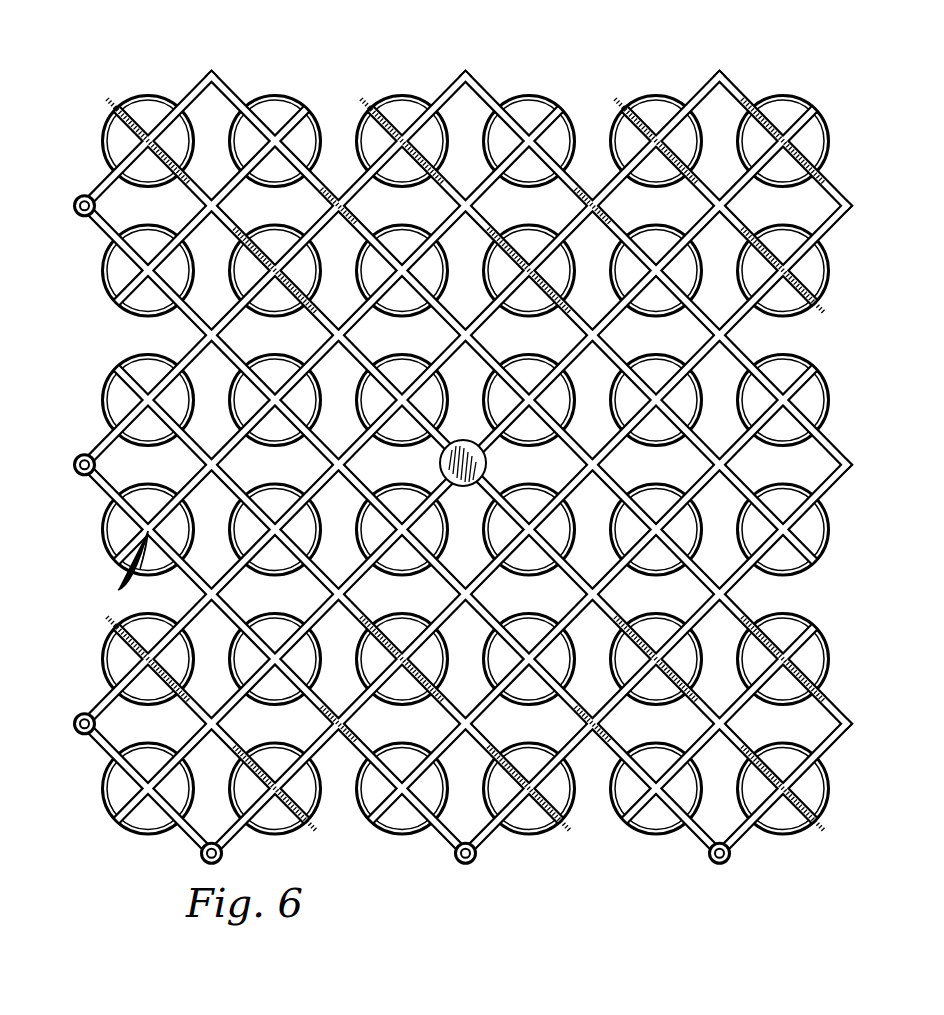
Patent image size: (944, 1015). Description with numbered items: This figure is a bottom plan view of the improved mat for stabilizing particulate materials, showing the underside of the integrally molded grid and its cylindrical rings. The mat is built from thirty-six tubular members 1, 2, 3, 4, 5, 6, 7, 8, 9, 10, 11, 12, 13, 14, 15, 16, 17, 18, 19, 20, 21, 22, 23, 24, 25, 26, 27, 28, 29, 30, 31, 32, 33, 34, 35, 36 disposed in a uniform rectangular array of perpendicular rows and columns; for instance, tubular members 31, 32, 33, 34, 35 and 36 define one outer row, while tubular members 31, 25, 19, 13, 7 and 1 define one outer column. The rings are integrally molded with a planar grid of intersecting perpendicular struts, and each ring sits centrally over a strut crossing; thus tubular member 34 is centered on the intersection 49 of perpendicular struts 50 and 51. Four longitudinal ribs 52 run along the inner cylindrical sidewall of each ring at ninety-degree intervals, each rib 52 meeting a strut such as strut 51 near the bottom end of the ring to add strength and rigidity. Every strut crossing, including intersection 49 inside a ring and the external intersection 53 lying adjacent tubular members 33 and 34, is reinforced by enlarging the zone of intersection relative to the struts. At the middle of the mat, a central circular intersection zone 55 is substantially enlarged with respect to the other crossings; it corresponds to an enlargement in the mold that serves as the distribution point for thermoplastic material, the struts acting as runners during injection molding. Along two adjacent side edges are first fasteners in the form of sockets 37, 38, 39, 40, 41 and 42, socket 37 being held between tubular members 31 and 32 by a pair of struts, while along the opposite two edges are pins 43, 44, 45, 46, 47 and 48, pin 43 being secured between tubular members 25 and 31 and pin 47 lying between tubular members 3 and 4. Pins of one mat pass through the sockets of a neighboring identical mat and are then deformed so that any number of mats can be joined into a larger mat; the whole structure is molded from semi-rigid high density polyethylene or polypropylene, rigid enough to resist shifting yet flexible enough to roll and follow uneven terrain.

The tubular member 1 is at (783, 120).
The tubular member 2 is at (783, 264).
The tubular member 3 is at (783, 394).
The tubular member 4 is at (783, 523).
The tubular member 5 is at (783, 653).
The tubular member 6 is at (783, 782).
The tubular member 7 is at (656, 120).
The tubular member 8 is at (656, 264).
The tubular member 9 is at (656, 394).
The tubular member 10 is at (656, 523).
The tubular member 11 is at (656, 653).
The tubular member 12 is at (656, 782).
The tubular member 13 is at (529, 120).
The tubular member 14 is at (529, 264).
The tubular member 15 is at (529, 394).
The tubular member 16 is at (529, 523).
The tubular member 17 is at (529, 653).
The tubular member 18 is at (529, 782).
The tubular member 19 is at (402, 120).
The tubular member 20 is at (402, 264).
The tubular member 21 is at (402, 394).
The tubular member 22 is at (390, 489).
The tubular member 23 is at (402, 653).
The tubular member 24 is at (402, 782).
The tubular member 25 is at (275, 120).
The tubular member 26 is at (275, 264).
The tubular member 27 is at (275, 394).
The tubular member 28 is at (275, 523).
The tubular member 29 is at (275, 653).
The tubular member 30 is at (275, 782).
The tubular member 31 is at (148, 120).
The tubular member 32 is at (103, 250).
The tubular member 33 is at (110, 372).
The tubular member 34 is at (103, 545).
The tubular member 35 is at (110, 630).
The tubular member 36 is at (101, 768).
The socket 37 is at (80, 194).
The socket 38 is at (80, 453).
The socket 39 is at (80, 713).
The socket 40 is at (201, 853).
The socket 41 is at (455, 853).
The socket 42 is at (709, 853).
The pin 43 is at (235, 41).
The pin 44 is at (488, 41).
The pin 45 is at (742, 41).
The pin 46 is at (846, 203).
The pin 47 is at (846, 463).
The pin 48 is at (846, 723).
The intersection 49 is at (120, 589).
The strut 50 is at (150, 486).
The strut 51 is at (172, 533).
The longitudinal rib 52 is at (113, 497).
The external intersection 53 is at (210, 460).
The central circular intersection zone 55 is at (460, 442).